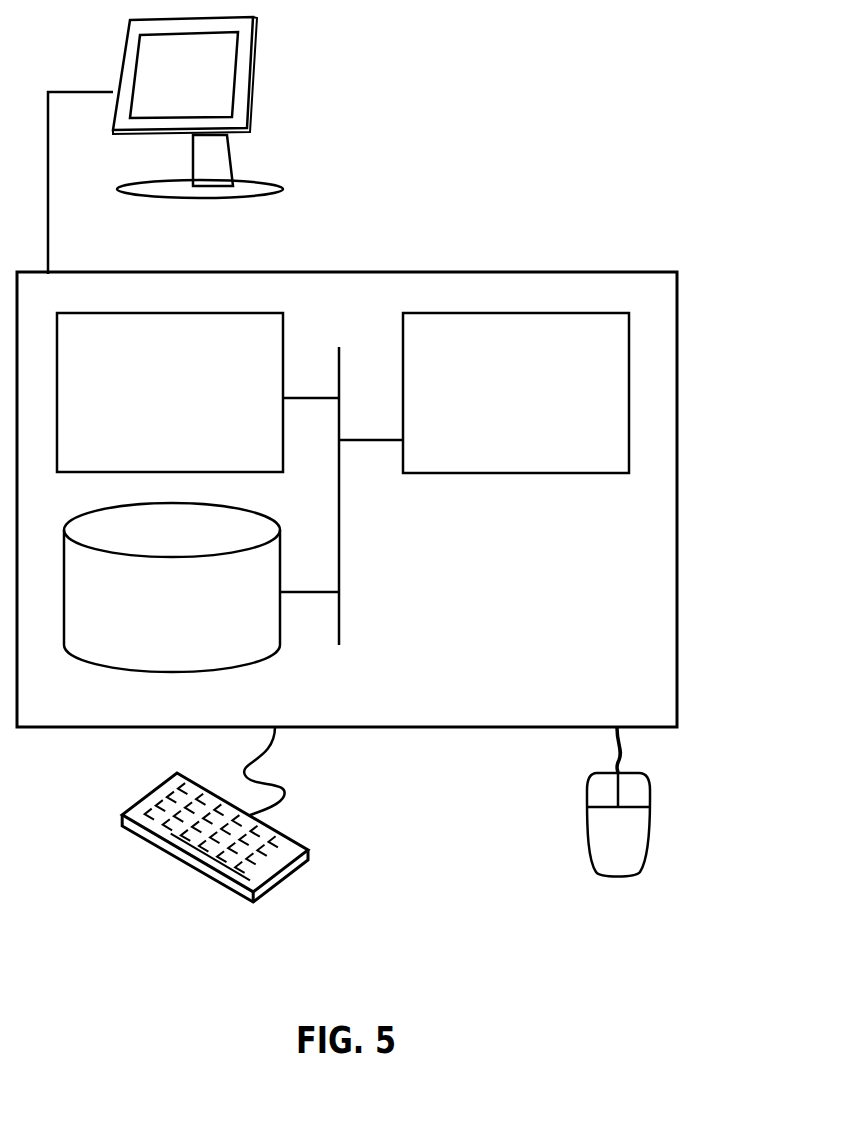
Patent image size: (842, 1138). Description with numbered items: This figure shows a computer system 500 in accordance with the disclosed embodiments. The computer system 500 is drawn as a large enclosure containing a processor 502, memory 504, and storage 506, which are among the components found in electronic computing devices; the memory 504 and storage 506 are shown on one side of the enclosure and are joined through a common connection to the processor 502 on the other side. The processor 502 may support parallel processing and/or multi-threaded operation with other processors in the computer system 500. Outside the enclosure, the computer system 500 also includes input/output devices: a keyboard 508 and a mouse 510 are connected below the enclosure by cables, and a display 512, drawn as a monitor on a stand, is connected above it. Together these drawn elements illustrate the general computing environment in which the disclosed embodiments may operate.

The computer system 500 is at (393, 250).
The processor 502 is at (540, 407).
The memory 504 is at (191, 405).
The storage 506 is at (197, 618).
The keyboard 508 is at (140, 837).
The mouse 510 is at (639, 848).
The display 512 is at (165, 145).